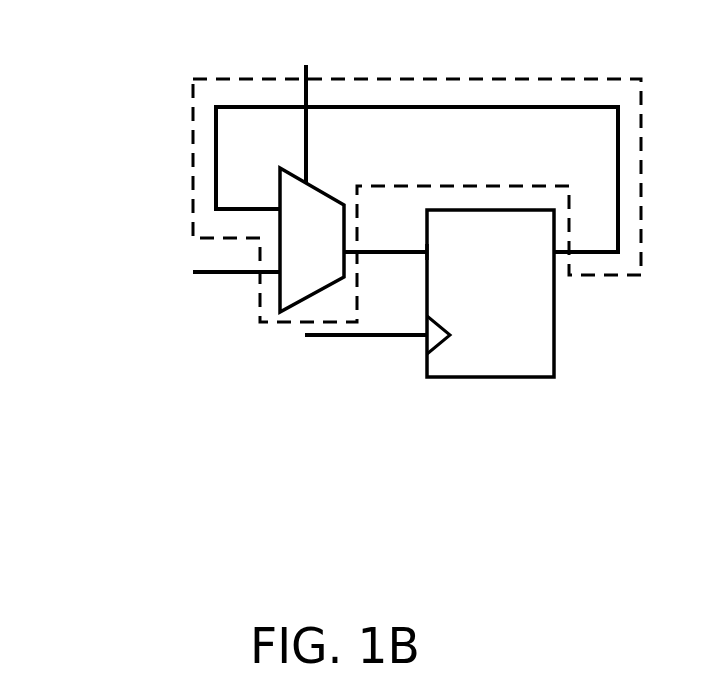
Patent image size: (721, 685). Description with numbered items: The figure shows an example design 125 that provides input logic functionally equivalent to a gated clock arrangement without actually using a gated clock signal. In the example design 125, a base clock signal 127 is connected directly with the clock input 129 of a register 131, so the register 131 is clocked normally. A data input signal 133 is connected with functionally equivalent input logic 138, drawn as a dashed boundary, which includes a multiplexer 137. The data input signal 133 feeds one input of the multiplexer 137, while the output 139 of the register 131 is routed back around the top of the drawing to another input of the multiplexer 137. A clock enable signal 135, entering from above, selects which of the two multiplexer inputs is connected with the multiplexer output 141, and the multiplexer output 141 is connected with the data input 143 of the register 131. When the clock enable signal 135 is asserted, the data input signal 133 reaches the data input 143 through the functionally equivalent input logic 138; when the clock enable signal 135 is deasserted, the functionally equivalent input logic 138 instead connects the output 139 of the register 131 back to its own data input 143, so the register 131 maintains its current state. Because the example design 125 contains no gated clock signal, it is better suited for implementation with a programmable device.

The example design 125 is at (355, 268).
The base clock signal 127 is at (167, 385).
The clock input 129 is at (421, 338).
The register 131 is at (490, 293).
The data input signal 133 is at (194, 270).
The clock enable signal 135 is at (334, 96).
The multiplexer 137 is at (312, 240).
The functionally equivalent input logic 138 is at (655, 65).
The output 139 is at (617, 177).
The multiplexer output 141 is at (381, 256).
The data input 143 is at (428, 255).